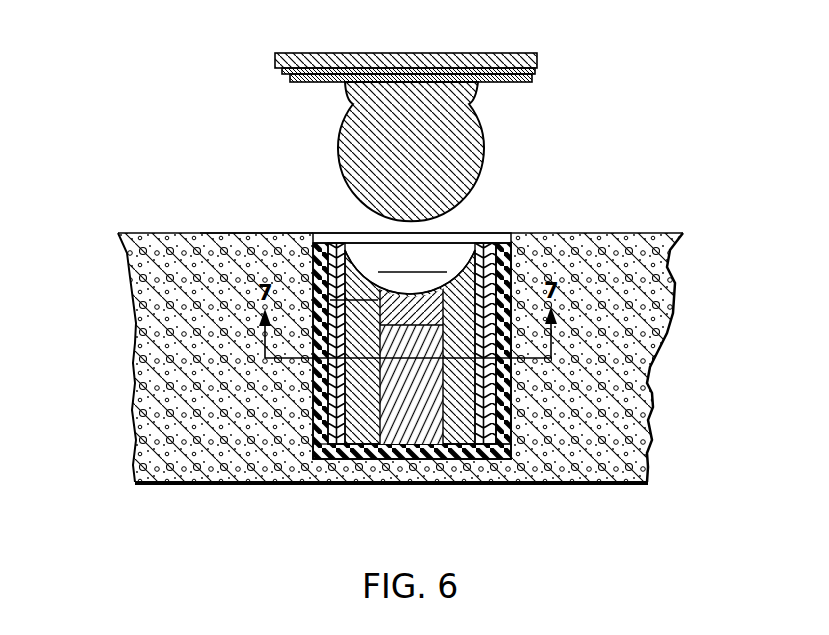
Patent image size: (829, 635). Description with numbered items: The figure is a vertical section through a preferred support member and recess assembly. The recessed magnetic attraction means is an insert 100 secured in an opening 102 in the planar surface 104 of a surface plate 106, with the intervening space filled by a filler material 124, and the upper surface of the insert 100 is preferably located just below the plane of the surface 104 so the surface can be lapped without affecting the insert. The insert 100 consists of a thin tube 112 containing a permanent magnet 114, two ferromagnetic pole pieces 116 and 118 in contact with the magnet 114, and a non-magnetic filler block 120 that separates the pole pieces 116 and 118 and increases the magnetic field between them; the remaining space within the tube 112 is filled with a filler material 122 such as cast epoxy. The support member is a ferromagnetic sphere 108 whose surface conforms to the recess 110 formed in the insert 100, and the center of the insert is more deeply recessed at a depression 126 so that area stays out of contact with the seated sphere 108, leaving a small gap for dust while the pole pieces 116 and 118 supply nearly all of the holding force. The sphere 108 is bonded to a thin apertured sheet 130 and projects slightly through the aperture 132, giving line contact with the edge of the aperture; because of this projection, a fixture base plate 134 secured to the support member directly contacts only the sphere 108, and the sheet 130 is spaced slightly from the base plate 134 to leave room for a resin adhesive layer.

The insert 100 is at (456, 220).
The opening 102 is at (320, 240).
The planar surface 104 is at (163, 233).
The surface plate 106 is at (132, 380).
The ferromagnetic sphere 108 is at (338, 138).
The recess 110 is at (354, 250).
The thin tube 112 is at (496, 243).
The permanent magnet 114 is at (408, 445).
The ferromagnetic pole piece 116 is at (360, 460).
The ferromagnetic pole piece 118 is at (488, 484).
The non-magnetic filler block 120 is at (257, 232).
The filler material 122 is at (337, 245).
The filler material 124 is at (503, 238).
The depression 126 is at (423, 293).
The thin apertured sheet 130 is at (290, 78).
The aperture 132 is at (388, 66).
The fixture base plate 134 is at (516, 52).